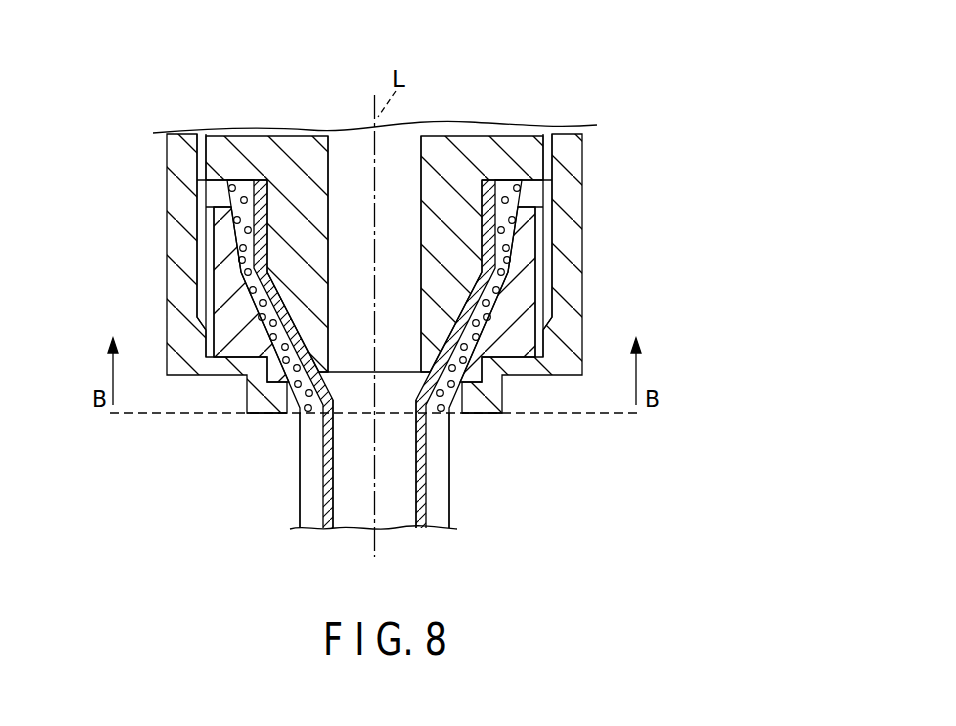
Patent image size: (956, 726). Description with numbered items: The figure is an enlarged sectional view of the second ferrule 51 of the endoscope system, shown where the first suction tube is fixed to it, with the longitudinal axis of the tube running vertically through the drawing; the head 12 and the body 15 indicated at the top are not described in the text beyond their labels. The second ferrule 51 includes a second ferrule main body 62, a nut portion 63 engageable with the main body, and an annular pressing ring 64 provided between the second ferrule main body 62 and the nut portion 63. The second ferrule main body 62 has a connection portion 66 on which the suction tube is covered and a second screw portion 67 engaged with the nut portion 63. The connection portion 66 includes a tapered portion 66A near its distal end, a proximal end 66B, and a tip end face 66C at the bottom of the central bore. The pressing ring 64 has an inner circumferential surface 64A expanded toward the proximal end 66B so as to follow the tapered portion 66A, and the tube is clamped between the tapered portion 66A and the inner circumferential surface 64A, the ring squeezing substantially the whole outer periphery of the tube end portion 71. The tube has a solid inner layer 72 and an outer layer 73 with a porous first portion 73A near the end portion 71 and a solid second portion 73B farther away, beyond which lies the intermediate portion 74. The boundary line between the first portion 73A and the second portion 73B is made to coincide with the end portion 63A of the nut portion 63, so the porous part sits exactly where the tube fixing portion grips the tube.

The liquid ejecting head 12 is at (496, 71).
The head body 15 is at (348, 122).
The second ferrule 51 is at (560, 96).
The second ferrule main body 62 is at (450, 137).
The nut portion 63 is at (175, 170).
The end portion of the nut portion 63A is at (265, 416).
The pressing ring 64 is at (220, 296).
The inner circumferential surface 64A is at (220, 260).
The connection portion 66 is at (318, 232).
The tapered portion 66A is at (305, 330).
The proximal end of the connection portion 66B is at (317, 183).
The tip end face of nozzle core 66C is at (355, 374).
The second screw portion 67 is at (201, 145).
The end portion 71 is at (244, 187).
The inner layer 72 is at (334, 444).
The outer layer 73 is at (301, 495).
The first portion 73A is at (223, 209).
The second portion 73B is at (301, 453).
The intermediate portion 74 is at (308, 524).